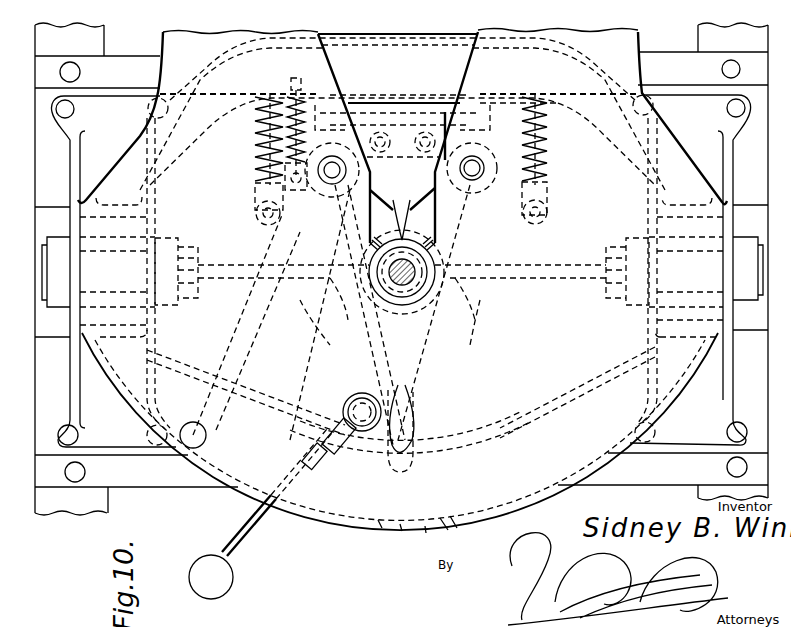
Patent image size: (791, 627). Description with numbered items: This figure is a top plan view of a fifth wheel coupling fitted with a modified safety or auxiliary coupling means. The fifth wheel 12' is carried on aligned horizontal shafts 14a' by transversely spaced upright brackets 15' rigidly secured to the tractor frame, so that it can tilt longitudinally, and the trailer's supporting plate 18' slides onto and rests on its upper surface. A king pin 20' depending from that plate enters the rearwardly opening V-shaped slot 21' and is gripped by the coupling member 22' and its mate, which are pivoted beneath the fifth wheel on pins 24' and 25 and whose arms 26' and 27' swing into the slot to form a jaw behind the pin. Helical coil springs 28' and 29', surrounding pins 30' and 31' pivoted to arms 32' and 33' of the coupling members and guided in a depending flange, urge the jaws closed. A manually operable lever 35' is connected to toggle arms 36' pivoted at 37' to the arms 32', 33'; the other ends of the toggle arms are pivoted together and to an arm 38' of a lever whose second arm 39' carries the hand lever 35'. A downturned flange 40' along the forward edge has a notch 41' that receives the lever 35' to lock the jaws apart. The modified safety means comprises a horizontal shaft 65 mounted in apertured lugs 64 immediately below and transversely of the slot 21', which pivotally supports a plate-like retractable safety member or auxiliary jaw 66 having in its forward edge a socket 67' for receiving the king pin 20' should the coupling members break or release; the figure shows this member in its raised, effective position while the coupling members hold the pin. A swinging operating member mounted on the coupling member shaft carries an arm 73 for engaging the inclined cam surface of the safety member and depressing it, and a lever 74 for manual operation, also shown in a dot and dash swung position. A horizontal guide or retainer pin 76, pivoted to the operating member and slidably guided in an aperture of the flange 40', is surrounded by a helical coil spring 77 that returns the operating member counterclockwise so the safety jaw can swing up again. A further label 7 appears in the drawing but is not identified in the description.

The fifth wheel 12' is at (402, 294).
The upright brackets 15' is at (401, 269).
The horizontal shafts 14a' is at (402, 267).
The supporting plate 18' is at (402, 143).
The king pin 20' is at (405, 288).
The V-shaped slot 21' is at (398, 122).
The coupling member 22' is at (522, 139).
The pin 24' is at (483, 178).
The pin 25 is at (334, 180).
The arm 26' is at (465, 310).
The arm 27' is at (324, 311).
The helical coil spring 28' is at (442, 299).
The helical coil spring 29' is at (249, 188).
The pin 30' is at (525, 126).
The pin 31' is at (250, 139).
The arm 32' is at (452, 312).
The arm 33' is at (246, 325).
The manually operable lever 35' is at (260, 514).
The toggle arms 36' is at (401, 376).
The pivot 37' is at (397, 216).
The arm 38' is at (358, 439).
The second arm 39' is at (340, 410).
The downturned flange 40' is at (410, 465).
The notch 41' is at (404, 538).
The apertured lugs 64 is at (312, 100).
The horizontal shaft 65 is at (390, 102).
The safety member 66 is at (423, 189).
The socket 67' is at (402, 257).
The arm 73 is at (402, 208).
The lever 74 is at (228, 352).
The guide or retainer pin 76 is at (293, 78).
The helical coil spring 77 is at (266, 92).
The rod 7 is at (280, 74).